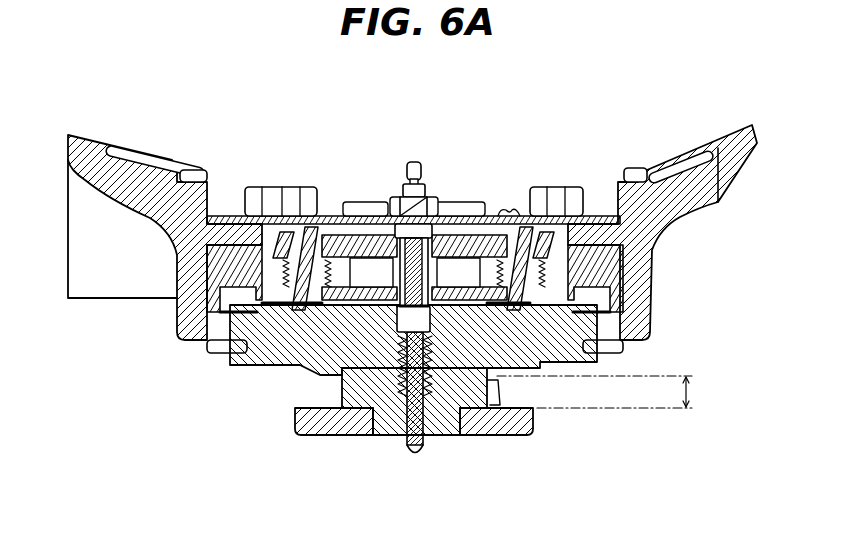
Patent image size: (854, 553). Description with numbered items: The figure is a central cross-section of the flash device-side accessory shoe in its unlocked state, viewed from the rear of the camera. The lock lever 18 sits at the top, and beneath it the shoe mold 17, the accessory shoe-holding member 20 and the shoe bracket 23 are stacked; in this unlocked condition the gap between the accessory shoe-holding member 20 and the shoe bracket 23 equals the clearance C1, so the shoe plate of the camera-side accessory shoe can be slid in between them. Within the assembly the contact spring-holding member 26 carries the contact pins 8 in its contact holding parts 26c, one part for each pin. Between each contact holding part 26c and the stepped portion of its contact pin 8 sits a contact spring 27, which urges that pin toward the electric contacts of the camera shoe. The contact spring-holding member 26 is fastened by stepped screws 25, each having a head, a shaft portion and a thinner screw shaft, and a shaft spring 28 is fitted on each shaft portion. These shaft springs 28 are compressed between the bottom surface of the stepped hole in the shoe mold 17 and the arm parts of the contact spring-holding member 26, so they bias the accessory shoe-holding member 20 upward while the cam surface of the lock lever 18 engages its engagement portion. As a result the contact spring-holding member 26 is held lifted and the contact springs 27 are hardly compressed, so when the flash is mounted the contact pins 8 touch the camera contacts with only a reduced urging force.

The contact pin 8 is at (408, 446).
The shoe mold 17 is at (460, 378).
The lock lever 18 is at (240, 268).
The accessory shoe-holding member 20 is at (280, 353).
The shoe bracket 23 is at (350, 428).
The stepped screw 25 is at (522, 240).
The contact spring-holding member 26 is at (352, 246).
The contact holding part 26c is at (413, 318).
The contact spring 27 is at (403, 381).
The shaft spring 28 is at (280, 277).
The clearance C1 is at (612, 392).